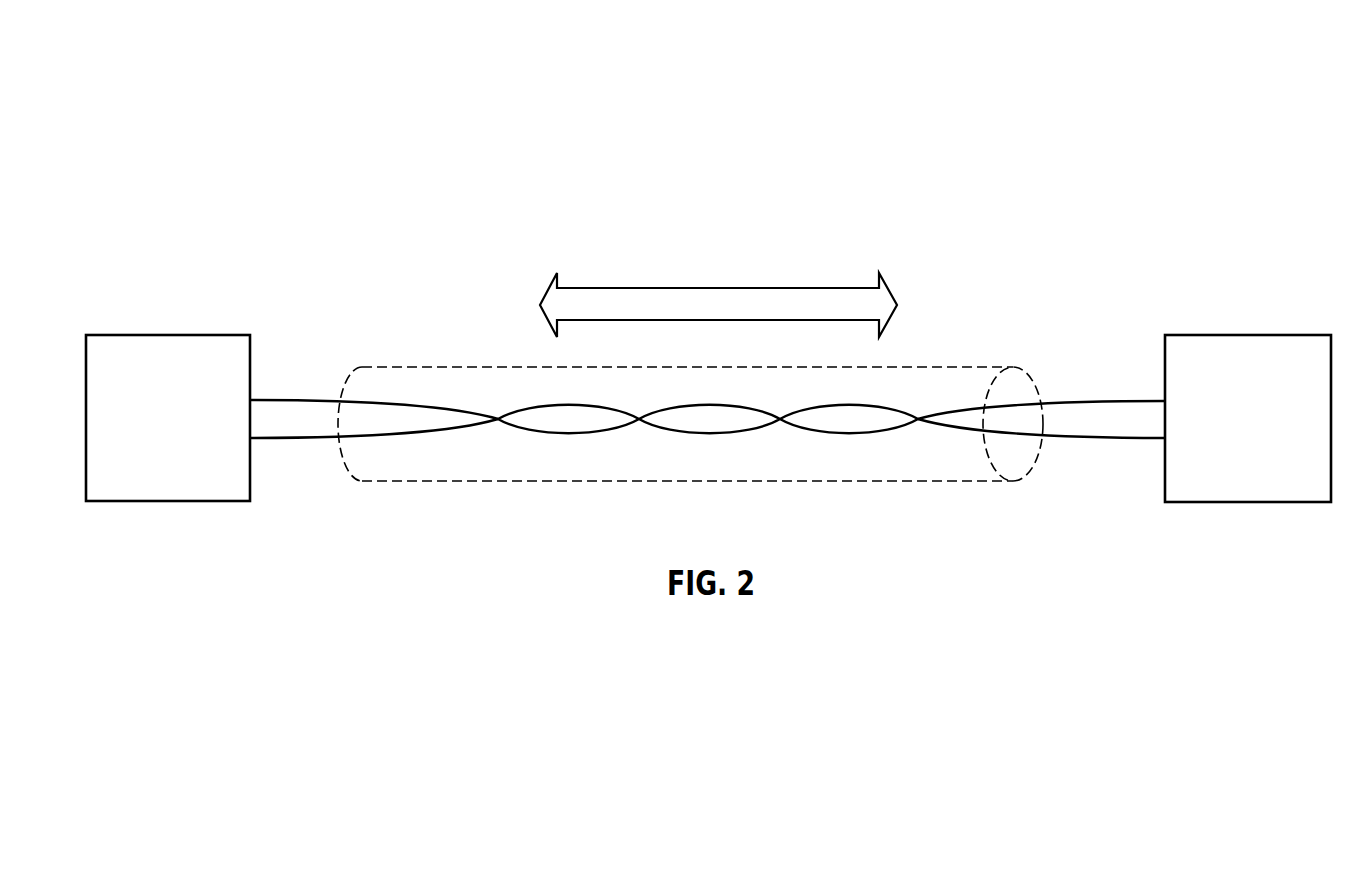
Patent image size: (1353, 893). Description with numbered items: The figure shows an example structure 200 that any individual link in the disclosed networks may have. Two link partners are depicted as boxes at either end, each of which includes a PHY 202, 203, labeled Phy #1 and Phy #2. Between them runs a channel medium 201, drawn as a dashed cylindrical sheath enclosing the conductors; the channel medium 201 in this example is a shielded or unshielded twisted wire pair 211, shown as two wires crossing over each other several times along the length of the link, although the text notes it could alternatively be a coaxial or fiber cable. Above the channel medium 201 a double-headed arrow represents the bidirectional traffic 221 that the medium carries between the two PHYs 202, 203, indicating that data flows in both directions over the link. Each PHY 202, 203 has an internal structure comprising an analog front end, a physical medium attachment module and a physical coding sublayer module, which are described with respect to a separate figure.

The link structure 200 is at (170, 54).
The channel medium 201 is at (414, 366).
The PHY 202 is at (161, 335).
The PHY 203 is at (1241, 335).
The twisted wire pair 211 is at (1087, 398).
The bidirectional traffic 221 is at (540, 305).